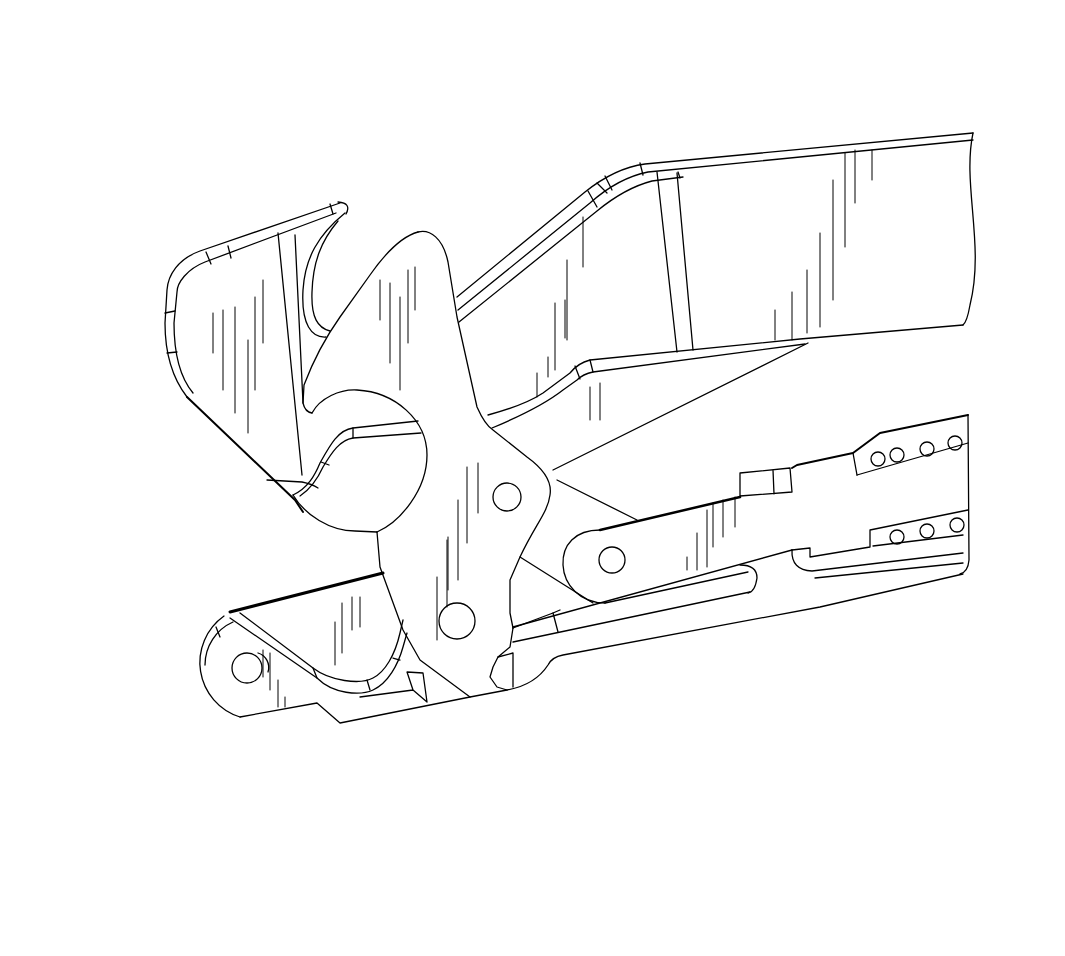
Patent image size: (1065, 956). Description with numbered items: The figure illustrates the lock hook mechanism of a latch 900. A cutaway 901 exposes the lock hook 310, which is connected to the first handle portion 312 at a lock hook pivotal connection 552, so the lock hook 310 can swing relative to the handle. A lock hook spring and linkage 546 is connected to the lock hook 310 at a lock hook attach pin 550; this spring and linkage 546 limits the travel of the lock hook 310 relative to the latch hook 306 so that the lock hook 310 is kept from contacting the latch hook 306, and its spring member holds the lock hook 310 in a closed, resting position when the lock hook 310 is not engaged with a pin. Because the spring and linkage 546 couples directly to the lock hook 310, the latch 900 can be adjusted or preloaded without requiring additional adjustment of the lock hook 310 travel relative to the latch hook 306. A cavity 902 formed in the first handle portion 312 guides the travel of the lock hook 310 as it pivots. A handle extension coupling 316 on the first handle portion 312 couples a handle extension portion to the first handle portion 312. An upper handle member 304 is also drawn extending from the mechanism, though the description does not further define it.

The latch 900 is at (989, 107).
The cutaway 901 is at (630, 158).
The upper handle member 304 is at (862, 160).
The latch hook 306 is at (235, 262).
The lock hook 310 is at (423, 248).
The first handle portion 312 is at (291, 613).
The handle extension coupling 316 is at (250, 673).
The lock hook spring and linkage 546 is at (987, 580).
The lock hook attach pin 550 is at (514, 497).
The lock hook pivotal connection 552 is at (458, 630).
The cavity 902 is at (507, 682).